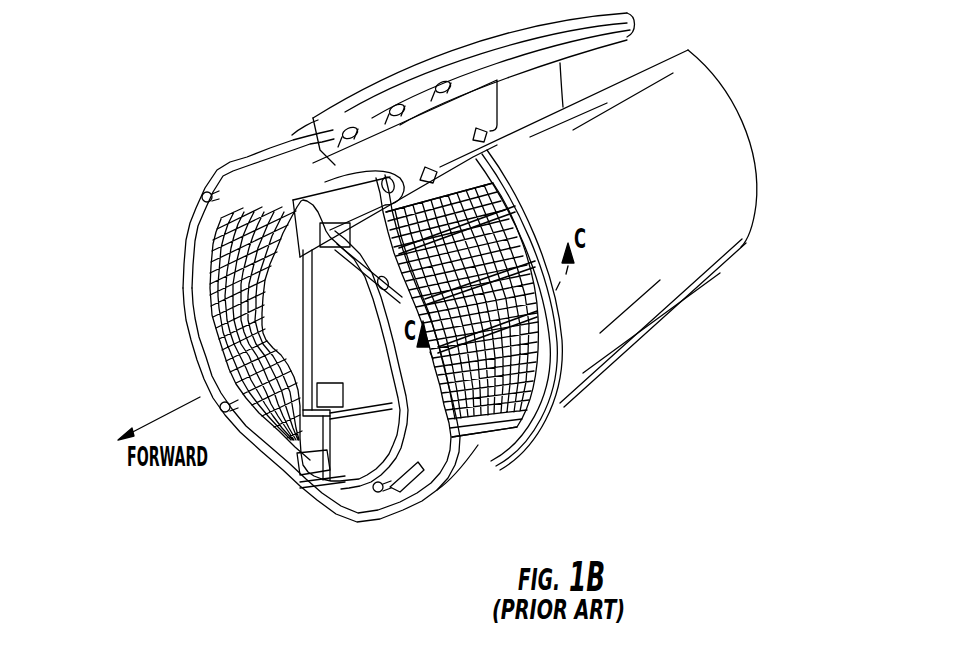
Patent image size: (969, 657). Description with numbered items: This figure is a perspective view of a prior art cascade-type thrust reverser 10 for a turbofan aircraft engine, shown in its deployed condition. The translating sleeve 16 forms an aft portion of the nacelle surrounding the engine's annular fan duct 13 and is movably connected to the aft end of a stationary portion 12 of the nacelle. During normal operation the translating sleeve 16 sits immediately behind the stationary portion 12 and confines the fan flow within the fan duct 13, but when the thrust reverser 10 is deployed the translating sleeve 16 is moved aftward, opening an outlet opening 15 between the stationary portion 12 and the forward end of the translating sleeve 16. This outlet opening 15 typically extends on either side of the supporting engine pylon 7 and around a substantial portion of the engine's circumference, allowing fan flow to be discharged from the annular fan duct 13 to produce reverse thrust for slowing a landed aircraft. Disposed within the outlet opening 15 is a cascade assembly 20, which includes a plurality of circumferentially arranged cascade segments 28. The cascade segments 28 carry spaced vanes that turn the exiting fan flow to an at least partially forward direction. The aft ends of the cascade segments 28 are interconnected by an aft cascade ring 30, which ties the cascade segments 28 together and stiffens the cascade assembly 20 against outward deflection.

The cascade-type thrust reverser 10 is at (150, 91).
The engine pylon 7 is at (405, 150).
The stationary portion of the nacelle 12 is at (242, 173).
The annular fan duct 13 is at (227, 290).
The outlet opening 15 is at (292, 135).
The translating sleeve 16 is at (673, 257).
The cascade assembly 20 is at (488, 425).
The cascade segments 28 is at (215, 255).
The aft cascade ring 30 is at (540, 363).